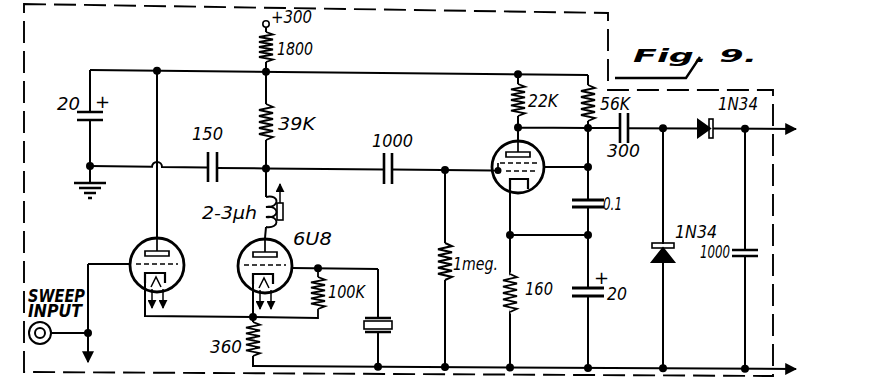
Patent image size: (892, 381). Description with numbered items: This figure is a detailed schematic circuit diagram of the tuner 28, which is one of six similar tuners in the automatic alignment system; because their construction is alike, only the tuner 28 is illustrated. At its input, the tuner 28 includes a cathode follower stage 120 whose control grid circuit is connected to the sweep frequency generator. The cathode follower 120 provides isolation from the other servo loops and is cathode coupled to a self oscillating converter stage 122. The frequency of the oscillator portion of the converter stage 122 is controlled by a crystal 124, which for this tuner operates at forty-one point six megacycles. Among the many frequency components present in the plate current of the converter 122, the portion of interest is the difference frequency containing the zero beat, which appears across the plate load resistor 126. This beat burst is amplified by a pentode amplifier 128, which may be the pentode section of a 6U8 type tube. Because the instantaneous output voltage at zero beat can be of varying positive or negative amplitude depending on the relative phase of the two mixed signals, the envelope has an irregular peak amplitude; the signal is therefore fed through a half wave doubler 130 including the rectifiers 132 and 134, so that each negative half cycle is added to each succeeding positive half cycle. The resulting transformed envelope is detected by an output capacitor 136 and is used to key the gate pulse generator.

The tuner 28 is at (773, 90).
The cathode follower stage 120 is at (134, 236).
The self oscillating converter stage 122 is at (229, 255).
The crystal 124 is at (369, 340).
The plate load resistor 126 is at (261, 111).
The pentode amplifier 128 is at (499, 136).
The half wave doubler 130 is at (679, 116).
The rectifier 132 is at (707, 136).
The rectifier 134 is at (652, 258).
The output capacitor 136 is at (733, 258).